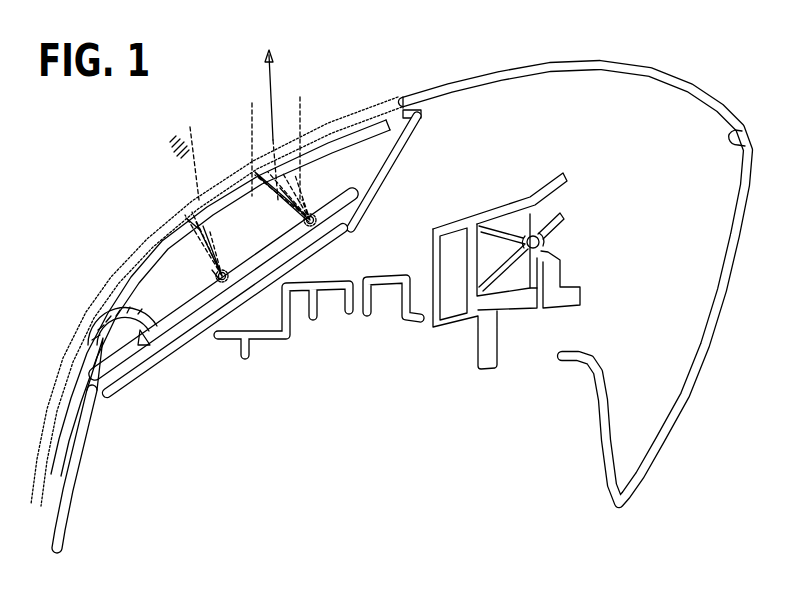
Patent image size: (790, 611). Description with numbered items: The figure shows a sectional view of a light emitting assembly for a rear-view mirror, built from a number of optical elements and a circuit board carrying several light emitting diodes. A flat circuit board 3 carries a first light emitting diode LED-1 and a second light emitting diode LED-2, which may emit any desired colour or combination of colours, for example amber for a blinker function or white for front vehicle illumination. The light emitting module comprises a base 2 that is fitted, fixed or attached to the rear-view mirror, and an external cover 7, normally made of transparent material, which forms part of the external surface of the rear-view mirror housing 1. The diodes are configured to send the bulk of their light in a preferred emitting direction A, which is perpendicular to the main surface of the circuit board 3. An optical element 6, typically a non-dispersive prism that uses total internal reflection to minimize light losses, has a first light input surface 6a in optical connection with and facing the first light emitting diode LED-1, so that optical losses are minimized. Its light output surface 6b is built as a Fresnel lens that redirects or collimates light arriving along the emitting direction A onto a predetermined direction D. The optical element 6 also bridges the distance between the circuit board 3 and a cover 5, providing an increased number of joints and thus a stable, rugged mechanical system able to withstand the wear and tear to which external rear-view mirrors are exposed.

The rear-view mirror housing 1 is at (667, 84).
The base 2 is at (157, 358).
The circuit board 3 is at (187, 310).
The cover 5 is at (367, 132).
The optical element 6 is at (215, 277).
The first light input surface 6a is at (219, 276).
The light output surface 6b is at (193, 225).
The external cover 7 is at (330, 127).
The first light emitting diode LED-1 is at (228, 283).
The second light emitting diode LED-2 is at (313, 225).
The predetermined direction D is at (257, 118).
The emitting direction A is at (179, 150).